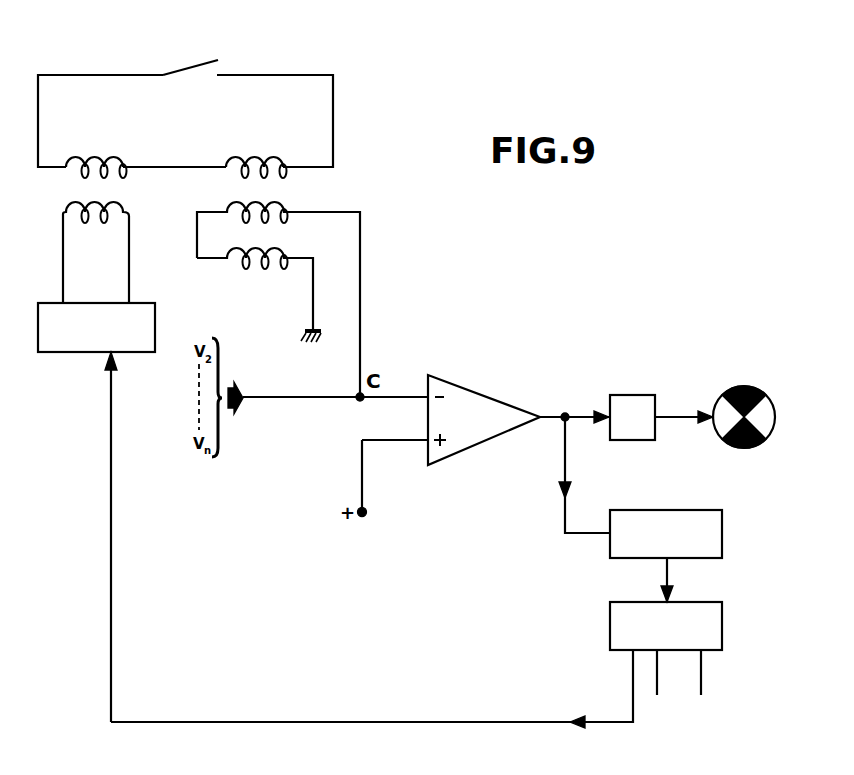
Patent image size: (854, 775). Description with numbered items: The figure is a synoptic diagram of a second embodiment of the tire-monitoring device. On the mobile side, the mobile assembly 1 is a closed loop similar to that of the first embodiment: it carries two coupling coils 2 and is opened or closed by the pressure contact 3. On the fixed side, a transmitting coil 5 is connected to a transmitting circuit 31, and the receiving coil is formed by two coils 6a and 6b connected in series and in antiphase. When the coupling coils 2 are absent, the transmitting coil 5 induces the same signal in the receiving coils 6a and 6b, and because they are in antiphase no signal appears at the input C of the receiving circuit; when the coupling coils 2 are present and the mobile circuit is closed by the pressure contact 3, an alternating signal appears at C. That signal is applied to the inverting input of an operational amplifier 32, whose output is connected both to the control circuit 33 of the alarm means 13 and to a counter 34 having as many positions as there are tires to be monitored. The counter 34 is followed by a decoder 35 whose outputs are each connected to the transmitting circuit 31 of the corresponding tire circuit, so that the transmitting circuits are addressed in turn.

The mobile assembly 1 is at (318, 113).
The coupling coils 2 is at (100, 150).
The pressure contact 3 is at (182, 63).
The transmitting coil 5 is at (66, 222).
The receiving coil 6a is at (277, 206).
The receiving coil 6b is at (253, 270).
The alarm means 13 is at (745, 389).
The transmitting circuit 31 is at (126, 343).
The operational amplifier 32 is at (497, 358).
The control circuit 33 is at (622, 396).
The counter with n positions 34 is at (619, 549).
The decoder 35 is at (620, 630).